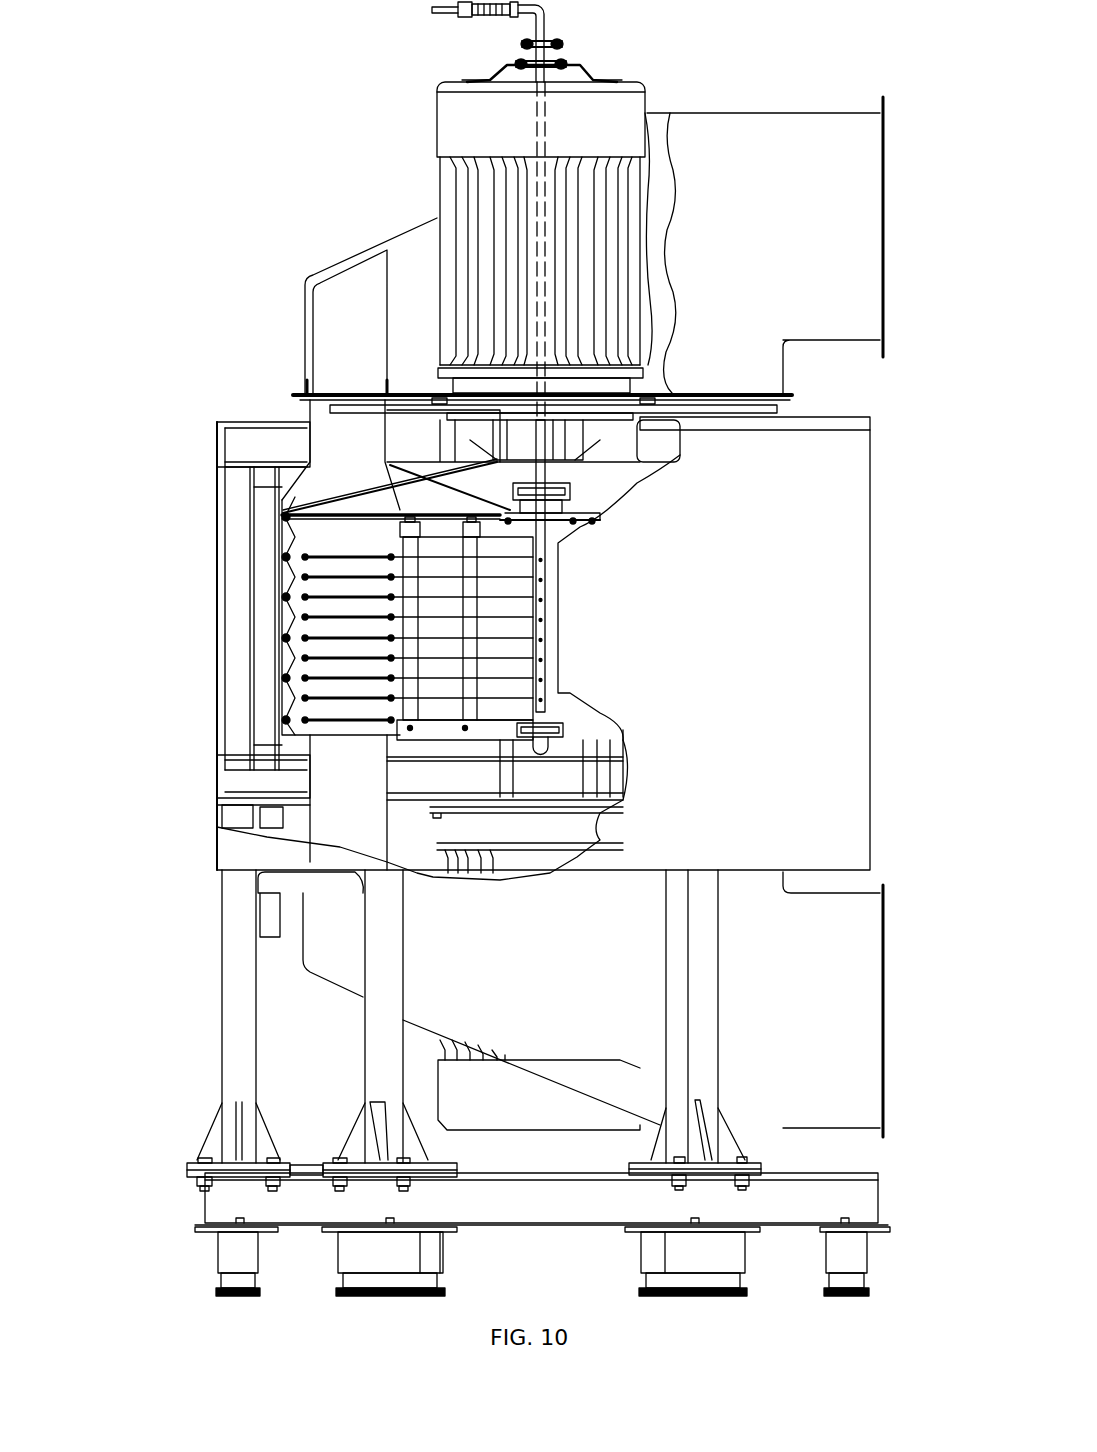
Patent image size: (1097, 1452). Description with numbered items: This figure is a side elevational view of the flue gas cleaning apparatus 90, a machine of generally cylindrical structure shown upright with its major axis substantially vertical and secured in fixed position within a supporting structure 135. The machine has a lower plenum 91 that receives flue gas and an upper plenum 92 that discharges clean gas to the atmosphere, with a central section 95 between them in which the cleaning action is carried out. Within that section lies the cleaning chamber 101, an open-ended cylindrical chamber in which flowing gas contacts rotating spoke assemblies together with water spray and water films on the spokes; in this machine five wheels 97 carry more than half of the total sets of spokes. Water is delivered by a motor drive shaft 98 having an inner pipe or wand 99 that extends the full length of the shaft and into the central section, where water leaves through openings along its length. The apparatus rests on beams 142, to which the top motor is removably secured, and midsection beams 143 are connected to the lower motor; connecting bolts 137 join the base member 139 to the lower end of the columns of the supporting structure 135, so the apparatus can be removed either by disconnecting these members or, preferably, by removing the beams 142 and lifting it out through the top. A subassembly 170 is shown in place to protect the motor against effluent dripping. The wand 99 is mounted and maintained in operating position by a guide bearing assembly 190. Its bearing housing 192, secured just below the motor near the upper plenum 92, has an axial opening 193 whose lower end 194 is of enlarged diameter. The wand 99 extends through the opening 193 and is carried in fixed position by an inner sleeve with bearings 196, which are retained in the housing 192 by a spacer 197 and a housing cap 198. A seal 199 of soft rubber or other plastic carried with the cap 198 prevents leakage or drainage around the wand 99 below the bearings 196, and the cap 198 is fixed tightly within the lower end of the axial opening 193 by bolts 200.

The apparatus 90 is at (293, 298).
The lower plenum 91 is at (520, 1135).
The upper plenum 92 is at (437, 133).
The central section 95 is at (286, 699).
The wheels 97 is at (558, 560).
The motor drive shaft 98 is at (586, 441).
The inner pipe 99 is at (545, 623).
The cleaning chamber 101 is at (304, 542).
The supporting structure 135 is at (213, 972).
The connecting bolts 137 is at (195, 1157).
The base member 139 is at (213, 1210).
The beams 142 is at (236, 419).
The midsection beams 143 is at (232, 778).
The subassembly 170 is at (590, 770).
The guide bearing assembly 190 is at (392, 473).
The bearing housing 192 is at (560, 490).
The axial opening 193 is at (547, 283).
The lower end 194 is at (578, 528).
The bearings 196 is at (560, 513).
The spacer 197 is at (540, 505).
The housing cap 198 is at (410, 528).
The seal 199 is at (565, 522).
The bolts 200 is at (430, 395).